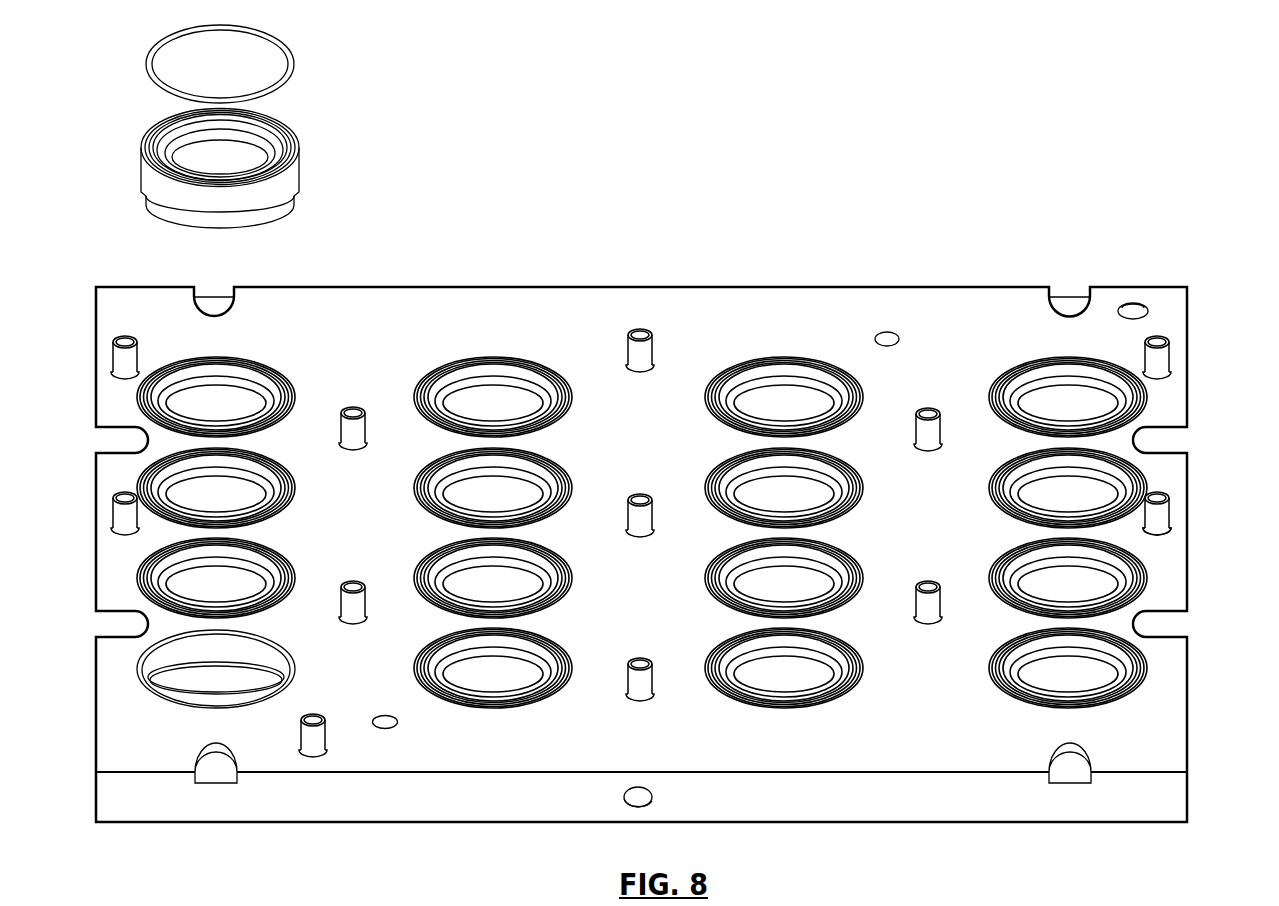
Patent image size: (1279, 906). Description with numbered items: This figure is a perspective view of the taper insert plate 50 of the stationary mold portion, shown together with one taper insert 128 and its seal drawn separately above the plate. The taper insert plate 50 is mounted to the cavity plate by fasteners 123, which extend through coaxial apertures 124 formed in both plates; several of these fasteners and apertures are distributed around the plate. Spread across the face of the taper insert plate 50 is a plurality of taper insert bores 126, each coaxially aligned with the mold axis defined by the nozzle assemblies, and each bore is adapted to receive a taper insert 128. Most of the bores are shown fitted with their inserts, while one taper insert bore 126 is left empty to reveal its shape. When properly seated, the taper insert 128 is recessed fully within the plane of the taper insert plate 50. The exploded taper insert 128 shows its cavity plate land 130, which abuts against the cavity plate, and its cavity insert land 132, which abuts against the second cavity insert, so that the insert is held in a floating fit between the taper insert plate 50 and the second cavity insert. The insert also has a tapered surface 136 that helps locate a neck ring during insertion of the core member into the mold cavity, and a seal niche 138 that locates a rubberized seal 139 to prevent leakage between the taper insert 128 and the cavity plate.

The taper insert plate 50 is at (1187, 710).
The fastener 123 is at (1170, 510).
The coaxial aperture 124 is at (1165, 535).
The taper insert bore 126 is at (285, 672).
The taper insert 128 is at (300, 179).
The cavity plate land 130 is at (147, 151).
The cavity insert land 132 is at (174, 138).
The tapered surface 136 is at (254, 152).
The seal niche 138 is at (303, 147).
The rubberized seal 139 is at (293, 63).